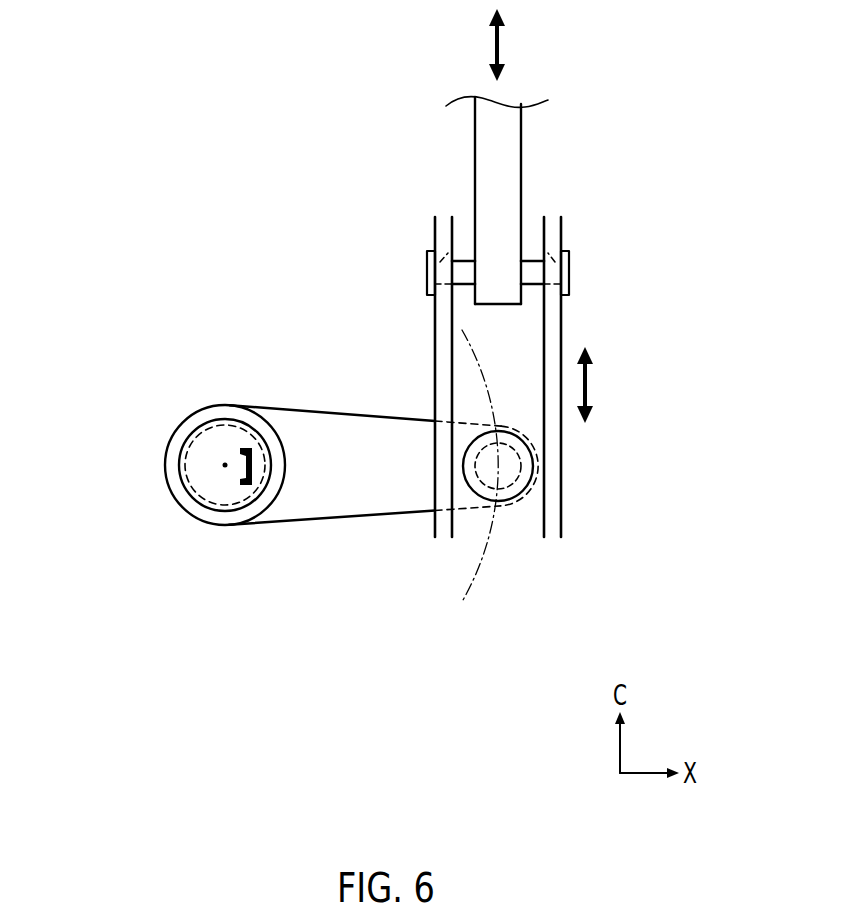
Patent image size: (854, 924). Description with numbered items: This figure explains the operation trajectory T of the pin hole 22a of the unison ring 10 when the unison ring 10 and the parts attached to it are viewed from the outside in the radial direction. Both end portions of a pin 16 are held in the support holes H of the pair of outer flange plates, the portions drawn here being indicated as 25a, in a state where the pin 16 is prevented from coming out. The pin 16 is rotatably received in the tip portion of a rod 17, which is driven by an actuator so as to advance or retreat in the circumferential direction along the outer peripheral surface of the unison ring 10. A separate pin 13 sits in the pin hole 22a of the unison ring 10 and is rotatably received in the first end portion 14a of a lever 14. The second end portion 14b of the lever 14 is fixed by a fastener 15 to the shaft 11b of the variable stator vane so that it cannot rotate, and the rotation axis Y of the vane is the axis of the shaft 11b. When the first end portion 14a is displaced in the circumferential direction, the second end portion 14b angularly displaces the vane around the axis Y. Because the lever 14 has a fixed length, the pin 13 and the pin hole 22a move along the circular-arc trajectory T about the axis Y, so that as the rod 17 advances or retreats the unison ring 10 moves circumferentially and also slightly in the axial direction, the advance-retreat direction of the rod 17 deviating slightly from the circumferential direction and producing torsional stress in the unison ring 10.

The unison ring 10 is at (432, 360).
The shaft 11b is at (200, 495).
The pin 13 is at (517, 500).
The lever 14 is at (348, 520).
The first end portion 14a is at (535, 447).
The second end portion 14b is at (165, 459).
The fastener 15 is at (240, 513).
The pin 16 is at (529, 280).
The rod 17 is at (482, 135).
The pin hole 22a is at (535, 473).
The guide blocks 25a is at (435, 232).
The support holes H is at (435, 244).
The rotation axis Y is at (225, 465).
The operation trajectory T is at (472, 590).